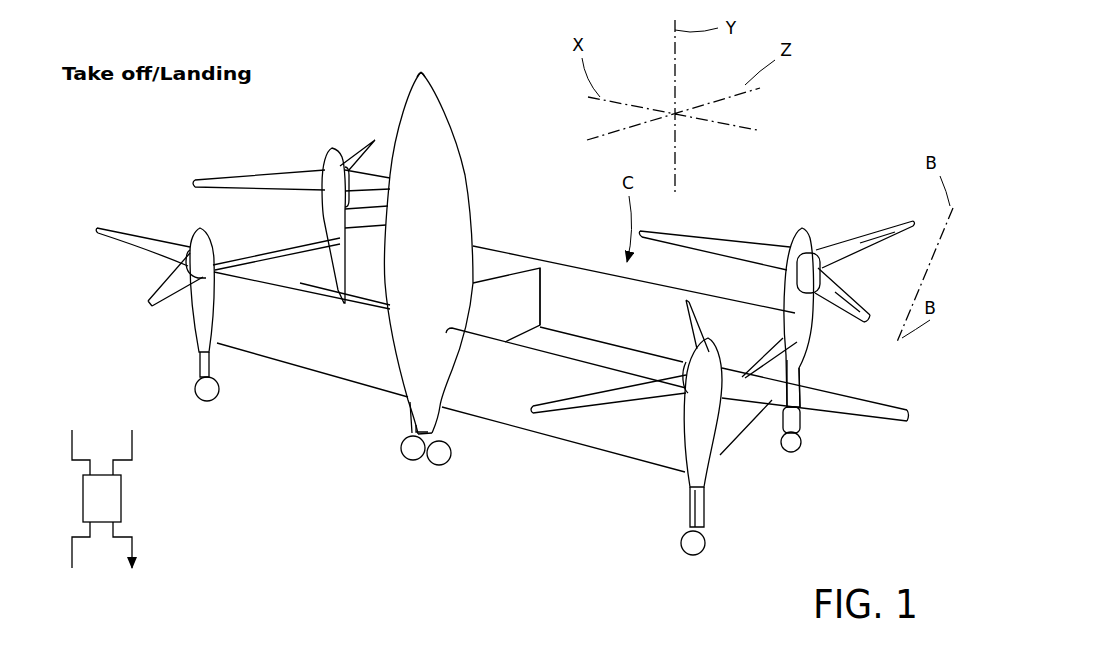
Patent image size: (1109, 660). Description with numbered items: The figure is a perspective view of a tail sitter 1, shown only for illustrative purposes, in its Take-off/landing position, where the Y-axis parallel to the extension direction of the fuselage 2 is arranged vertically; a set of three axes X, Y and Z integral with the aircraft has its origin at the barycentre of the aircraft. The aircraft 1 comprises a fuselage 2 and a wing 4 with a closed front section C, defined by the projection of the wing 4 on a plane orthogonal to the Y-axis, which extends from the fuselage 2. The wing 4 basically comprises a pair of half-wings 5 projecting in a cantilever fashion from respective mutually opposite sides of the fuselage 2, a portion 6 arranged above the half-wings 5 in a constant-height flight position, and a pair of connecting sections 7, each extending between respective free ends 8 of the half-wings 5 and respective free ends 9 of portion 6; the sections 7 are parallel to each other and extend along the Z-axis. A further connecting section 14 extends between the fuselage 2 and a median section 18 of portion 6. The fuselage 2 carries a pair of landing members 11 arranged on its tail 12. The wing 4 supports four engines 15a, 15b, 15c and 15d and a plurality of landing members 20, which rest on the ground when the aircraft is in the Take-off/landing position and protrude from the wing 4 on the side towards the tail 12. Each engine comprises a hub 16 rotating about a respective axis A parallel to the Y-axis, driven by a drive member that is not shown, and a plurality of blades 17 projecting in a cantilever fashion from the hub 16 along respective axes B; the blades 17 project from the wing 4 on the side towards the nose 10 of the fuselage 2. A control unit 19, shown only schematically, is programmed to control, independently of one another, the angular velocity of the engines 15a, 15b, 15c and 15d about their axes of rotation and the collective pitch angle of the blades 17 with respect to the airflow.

The tail sitter 1 is at (836, 74).
The fuselage 2 is at (452, 170).
The wing 4 is at (532, 210).
The half-wings 5 is at (330, 375).
The portion 6 is at (590, 305).
The connecting sections 7 is at (280, 268).
The free ends of the half-wings 8 is at (198, 330).
The free ends of portion 9 is at (338, 238).
The nose 10 is at (418, 82).
The landing members 11 is at (423, 467).
The tail 12 is at (415, 415).
The further connecting section 14 is at (495, 298).
The engine 15a is at (116, 298).
The engine 15b is at (762, 489).
The engine 15c is at (326, 127).
The engine 15d is at (848, 180).
The hub 16 is at (325, 160).
The blades 17 is at (863, 307).
The median section 18 is at (548, 290).
The control unit 19 is at (92, 507).
The landing members 20 is at (210, 399).